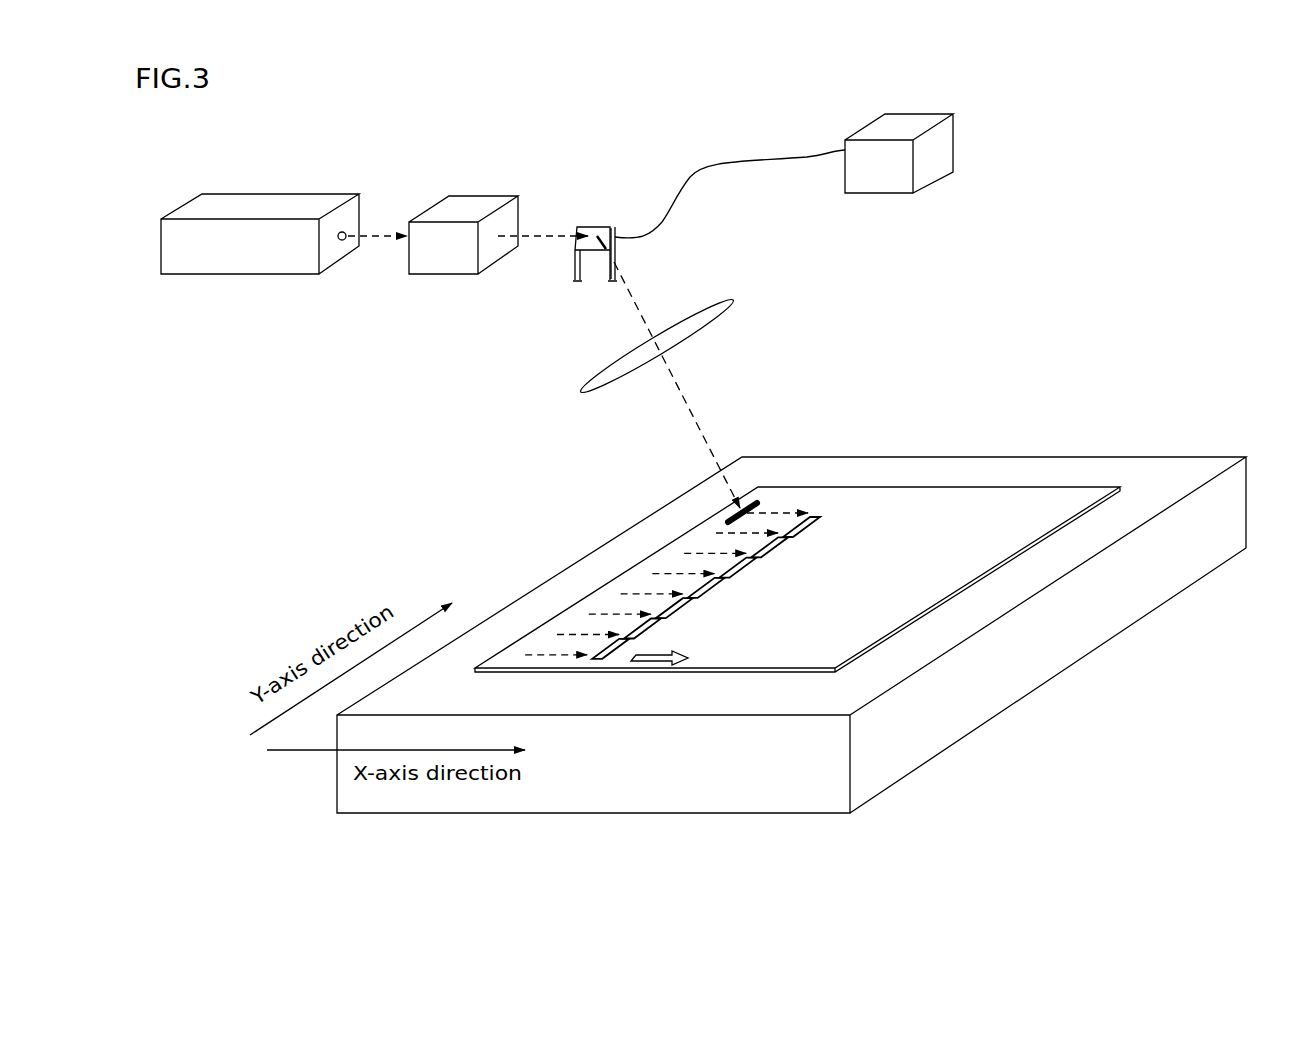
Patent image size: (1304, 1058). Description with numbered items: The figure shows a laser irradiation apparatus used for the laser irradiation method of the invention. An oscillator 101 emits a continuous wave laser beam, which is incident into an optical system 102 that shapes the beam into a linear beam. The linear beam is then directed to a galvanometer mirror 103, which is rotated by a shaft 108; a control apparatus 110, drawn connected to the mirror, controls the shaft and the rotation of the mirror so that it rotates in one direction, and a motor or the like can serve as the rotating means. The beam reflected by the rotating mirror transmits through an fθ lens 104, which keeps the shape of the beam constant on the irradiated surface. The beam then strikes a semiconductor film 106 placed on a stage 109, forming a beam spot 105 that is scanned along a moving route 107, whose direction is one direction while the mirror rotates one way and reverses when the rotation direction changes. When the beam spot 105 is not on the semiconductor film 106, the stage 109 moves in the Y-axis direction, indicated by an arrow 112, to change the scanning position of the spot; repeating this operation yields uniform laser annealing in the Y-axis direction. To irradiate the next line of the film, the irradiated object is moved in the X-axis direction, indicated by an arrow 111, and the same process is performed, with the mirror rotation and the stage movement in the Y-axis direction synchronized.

The oscillator 101 is at (348, 178).
The optical system 102 is at (467, 274).
The galvanometer mirror 103 is at (578, 227).
The fθ lens 104 is at (732, 302).
The beam spot 105 is at (730, 520).
The semiconductor film 106 is at (1140, 438).
The moving route 107 is at (690, 555).
The shaft 108 is at (612, 233).
The stage 109 is at (1025, 673).
The control apparatus 110 is at (953, 150).
The arrow indicating movement in the X-axis direction 111 is at (636, 665).
The arrow indicating movement in the Y-axis direction 112 is at (635, 632).